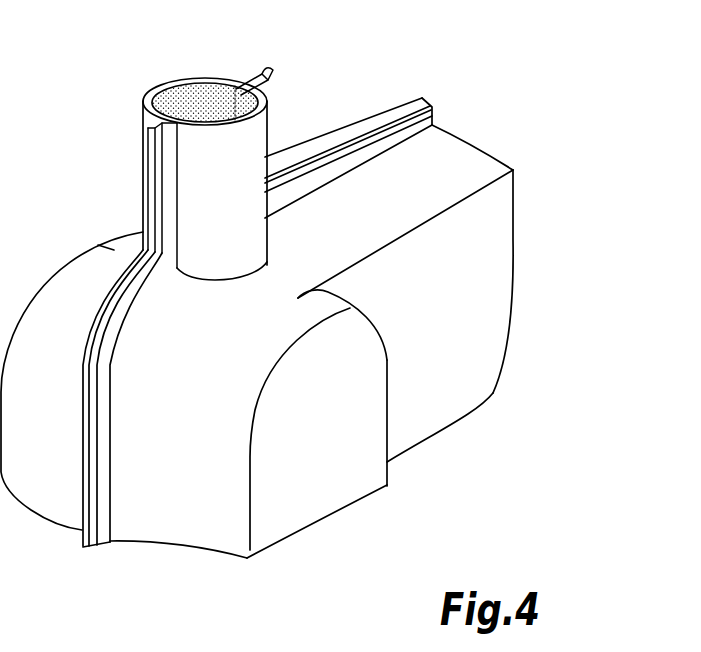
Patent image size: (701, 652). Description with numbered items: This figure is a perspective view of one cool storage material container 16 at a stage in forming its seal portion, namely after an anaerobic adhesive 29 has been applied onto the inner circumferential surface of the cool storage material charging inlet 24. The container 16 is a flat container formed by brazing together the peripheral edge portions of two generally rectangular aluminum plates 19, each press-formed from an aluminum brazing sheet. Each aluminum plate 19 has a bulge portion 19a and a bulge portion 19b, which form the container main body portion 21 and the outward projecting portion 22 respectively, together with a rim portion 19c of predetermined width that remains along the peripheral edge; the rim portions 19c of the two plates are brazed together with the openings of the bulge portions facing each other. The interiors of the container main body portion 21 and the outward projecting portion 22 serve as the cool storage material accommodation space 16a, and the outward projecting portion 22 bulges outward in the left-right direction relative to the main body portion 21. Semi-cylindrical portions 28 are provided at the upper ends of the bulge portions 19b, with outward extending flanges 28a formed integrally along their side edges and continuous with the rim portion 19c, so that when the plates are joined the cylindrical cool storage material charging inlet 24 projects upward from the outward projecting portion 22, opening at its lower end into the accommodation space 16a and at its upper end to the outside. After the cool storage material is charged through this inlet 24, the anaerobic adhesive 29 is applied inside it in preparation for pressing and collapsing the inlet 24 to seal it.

The cool storage material container 16 is at (486, 152).
The cool storage material accommodation space 16a is at (463, 400).
The aluminum plate 19 is at (433, 102).
The bulge portion 19a is at (493, 279).
The bulge portion 19b is at (288, 488).
The rim portion 19c is at (100, 549).
The container main body portion 21 is at (473, 352).
The outward projecting portion 22 is at (387, 486).
The cool storage material charging inlet 24 is at (137, 135).
The semi-cylindrical portion 28 is at (143, 96).
The outward extending flange 28a is at (250, 78).
The anaerobic adhesive 29 is at (196, 92).